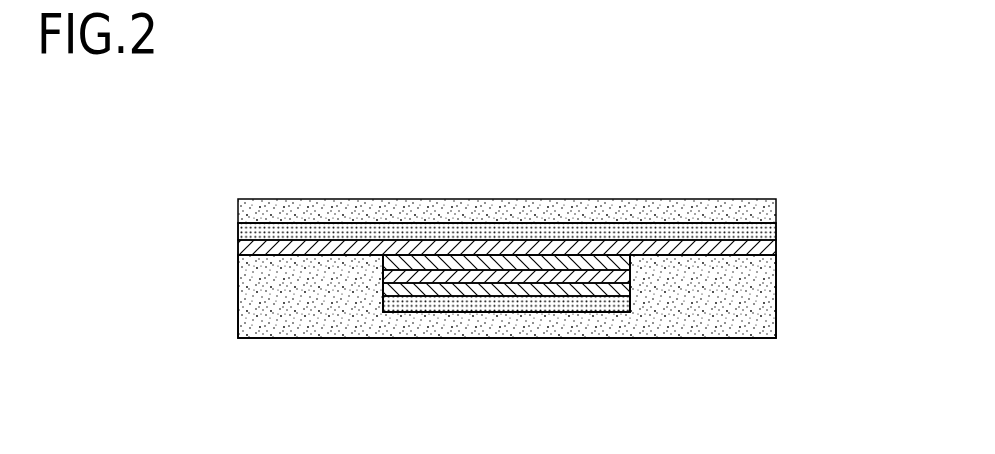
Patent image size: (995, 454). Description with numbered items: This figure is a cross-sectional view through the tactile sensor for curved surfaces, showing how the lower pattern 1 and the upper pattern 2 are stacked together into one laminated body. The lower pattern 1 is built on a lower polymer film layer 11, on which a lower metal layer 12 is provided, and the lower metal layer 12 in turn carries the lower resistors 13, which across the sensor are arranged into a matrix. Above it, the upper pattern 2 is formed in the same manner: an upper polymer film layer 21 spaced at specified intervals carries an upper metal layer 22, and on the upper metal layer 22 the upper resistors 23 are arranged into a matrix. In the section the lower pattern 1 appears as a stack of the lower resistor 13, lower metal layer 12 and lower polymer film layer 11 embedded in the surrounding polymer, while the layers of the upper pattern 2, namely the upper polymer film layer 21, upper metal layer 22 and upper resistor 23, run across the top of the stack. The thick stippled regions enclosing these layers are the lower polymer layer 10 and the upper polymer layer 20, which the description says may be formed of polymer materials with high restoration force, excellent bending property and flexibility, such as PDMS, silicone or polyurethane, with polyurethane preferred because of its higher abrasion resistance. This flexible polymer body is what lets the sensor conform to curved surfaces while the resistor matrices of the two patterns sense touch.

The lower pattern 1 is at (830, 237).
The upper pattern 2 is at (162, 223).
The substrate 10 is at (342, 302).
The lower polymer film layer 11 is at (630, 303).
The lower metal layer 12 is at (630, 286).
The lower resistor 13 is at (630, 267).
The base material layer 20 is at (247, 210).
The upper polymer film layer 21 is at (238, 232).
The upper metal layer 22 is at (238, 250).
The upper resistor 23 is at (383, 259).